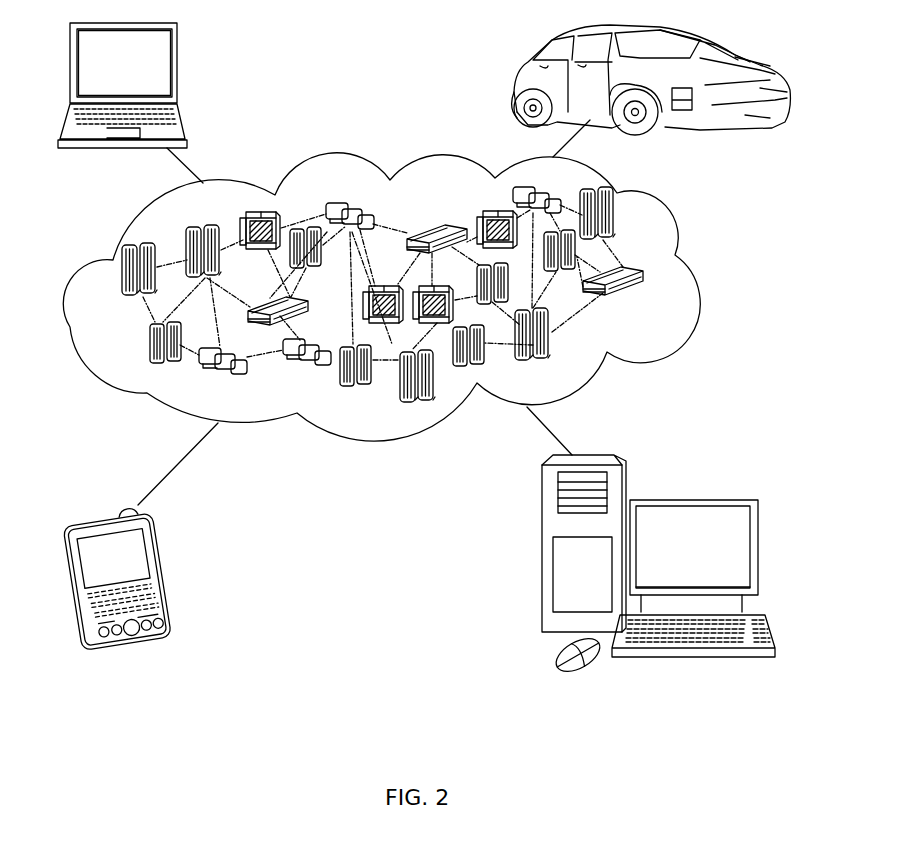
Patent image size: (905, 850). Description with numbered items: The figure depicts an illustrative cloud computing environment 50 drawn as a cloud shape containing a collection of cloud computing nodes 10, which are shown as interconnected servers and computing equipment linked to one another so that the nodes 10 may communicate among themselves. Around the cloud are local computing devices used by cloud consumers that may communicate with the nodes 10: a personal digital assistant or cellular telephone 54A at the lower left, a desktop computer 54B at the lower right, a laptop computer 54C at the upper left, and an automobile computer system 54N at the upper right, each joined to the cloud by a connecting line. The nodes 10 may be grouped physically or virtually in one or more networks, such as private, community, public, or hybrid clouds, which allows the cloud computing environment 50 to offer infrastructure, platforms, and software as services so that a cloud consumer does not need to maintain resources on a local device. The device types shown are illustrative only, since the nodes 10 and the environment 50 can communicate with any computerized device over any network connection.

The cloud computing node 10 is at (643, 300).
The cloud computing environment 50 is at (692, 281).
The personal digital assistant or cellular telephone 54A is at (168, 571).
The desktop computer 54B is at (688, 500).
The laptop computer 54C is at (178, 70).
The automobile computer system 54N is at (519, 82).